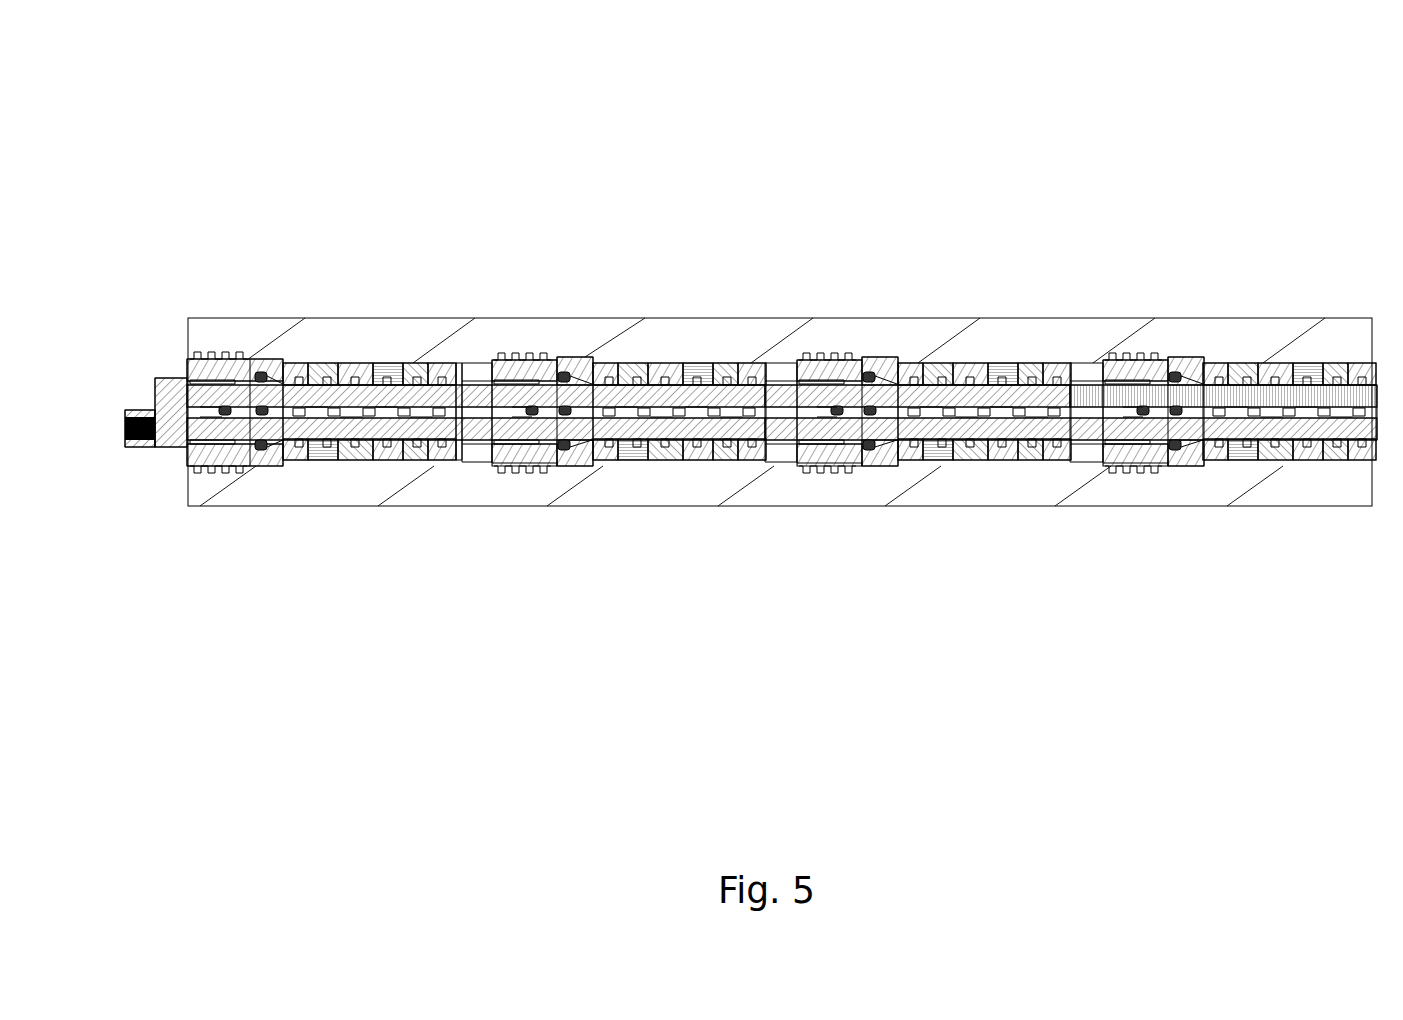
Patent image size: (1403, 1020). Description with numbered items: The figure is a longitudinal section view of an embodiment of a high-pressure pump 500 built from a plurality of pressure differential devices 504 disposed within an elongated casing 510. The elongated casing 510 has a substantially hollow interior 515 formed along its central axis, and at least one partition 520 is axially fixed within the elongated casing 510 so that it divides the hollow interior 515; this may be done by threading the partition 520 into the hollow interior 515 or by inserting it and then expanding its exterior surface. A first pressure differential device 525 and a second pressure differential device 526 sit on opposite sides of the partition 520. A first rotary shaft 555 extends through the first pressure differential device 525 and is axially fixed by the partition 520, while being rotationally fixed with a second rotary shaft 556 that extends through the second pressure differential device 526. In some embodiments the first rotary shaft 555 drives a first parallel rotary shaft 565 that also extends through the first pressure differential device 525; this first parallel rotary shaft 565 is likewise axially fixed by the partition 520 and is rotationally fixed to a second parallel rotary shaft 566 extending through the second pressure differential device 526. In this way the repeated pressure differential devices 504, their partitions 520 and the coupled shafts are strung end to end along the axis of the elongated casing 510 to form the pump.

The high-pressure pump 500 is at (366, 117).
The pressure differential devices 504 is at (1250, 270).
The elongated casing 510 is at (362, 490).
The hollow interior 515 is at (418, 452).
The partition 520 is at (825, 457).
The first pressure differential device 525 is at (990, 452).
The second pressure differential device 526 is at (687, 453).
The first rotary shaft 555 is at (1040, 397).
The second rotary shaft 556 is at (665, 397).
The first parallel rotary shaft 565 is at (915, 428).
The second parallel rotary shaft 566 is at (732, 430).